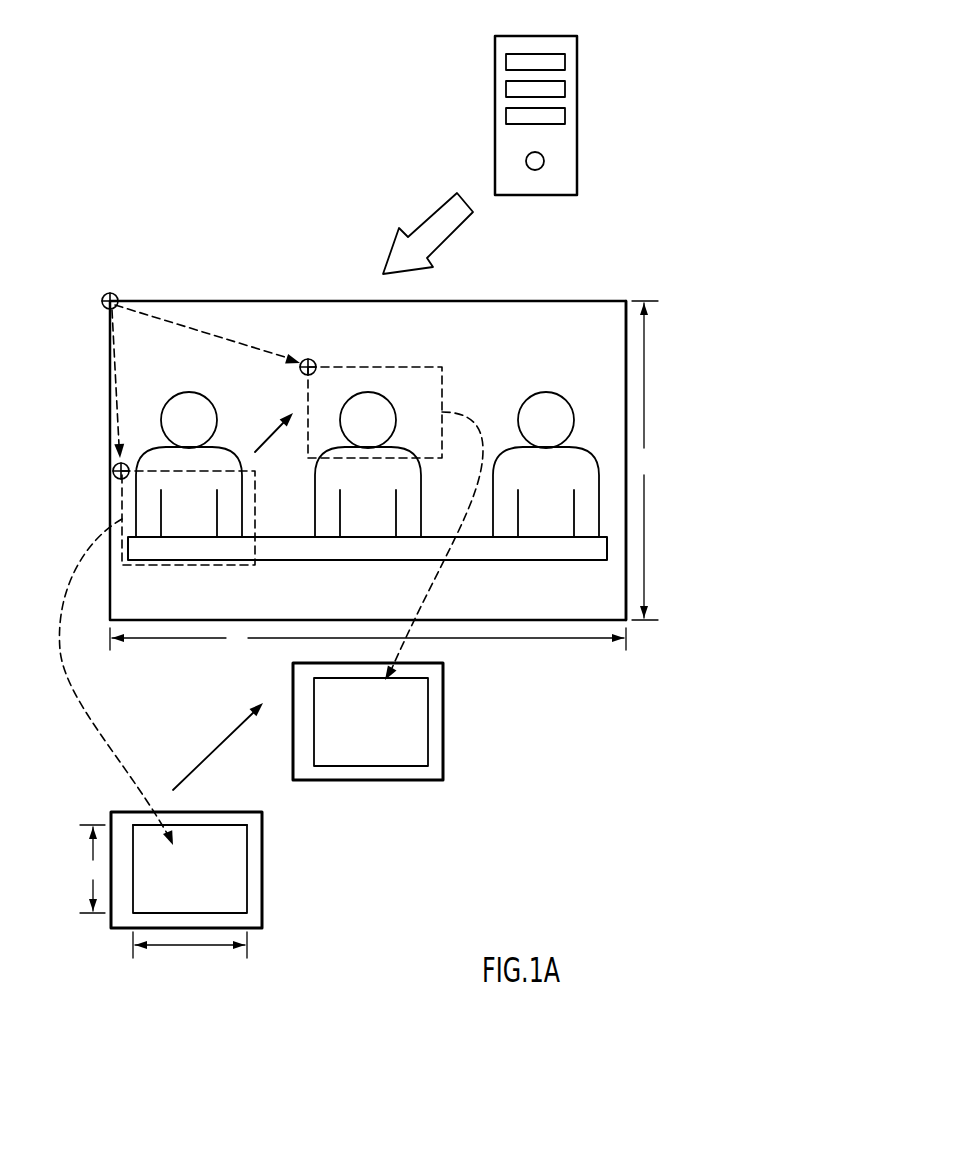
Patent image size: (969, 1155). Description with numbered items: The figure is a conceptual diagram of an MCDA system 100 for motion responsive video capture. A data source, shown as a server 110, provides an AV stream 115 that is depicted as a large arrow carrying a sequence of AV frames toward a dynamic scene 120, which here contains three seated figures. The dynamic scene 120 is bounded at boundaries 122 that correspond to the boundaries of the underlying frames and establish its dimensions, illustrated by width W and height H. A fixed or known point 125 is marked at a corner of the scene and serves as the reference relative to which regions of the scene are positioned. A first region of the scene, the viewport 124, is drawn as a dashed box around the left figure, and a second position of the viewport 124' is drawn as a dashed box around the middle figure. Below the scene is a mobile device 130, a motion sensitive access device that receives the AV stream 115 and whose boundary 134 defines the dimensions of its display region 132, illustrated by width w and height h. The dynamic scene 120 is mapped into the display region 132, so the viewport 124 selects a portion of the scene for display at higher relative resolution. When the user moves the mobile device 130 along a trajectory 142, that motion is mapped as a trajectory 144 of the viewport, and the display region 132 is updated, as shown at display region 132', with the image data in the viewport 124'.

The MCDA system 100 is at (247, 115).
The server 110 is at (577, 115).
The AV stream 115 is at (427, 214).
The dynamic scene 120 is at (523, 310).
The boundaries 122 is at (627, 388).
The viewport 124 is at (177, 654).
The viewport 124' is at (391, 504).
The fixed or known point 125 is at (110, 292).
The mobile device 130 is at (255, 887).
The display region 132 is at (225, 869).
The display region 132' is at (388, 721).
The boundary 134 is at (214, 823).
The trajectory 142 is at (215, 748).
The trajectory 144 is at (267, 435).